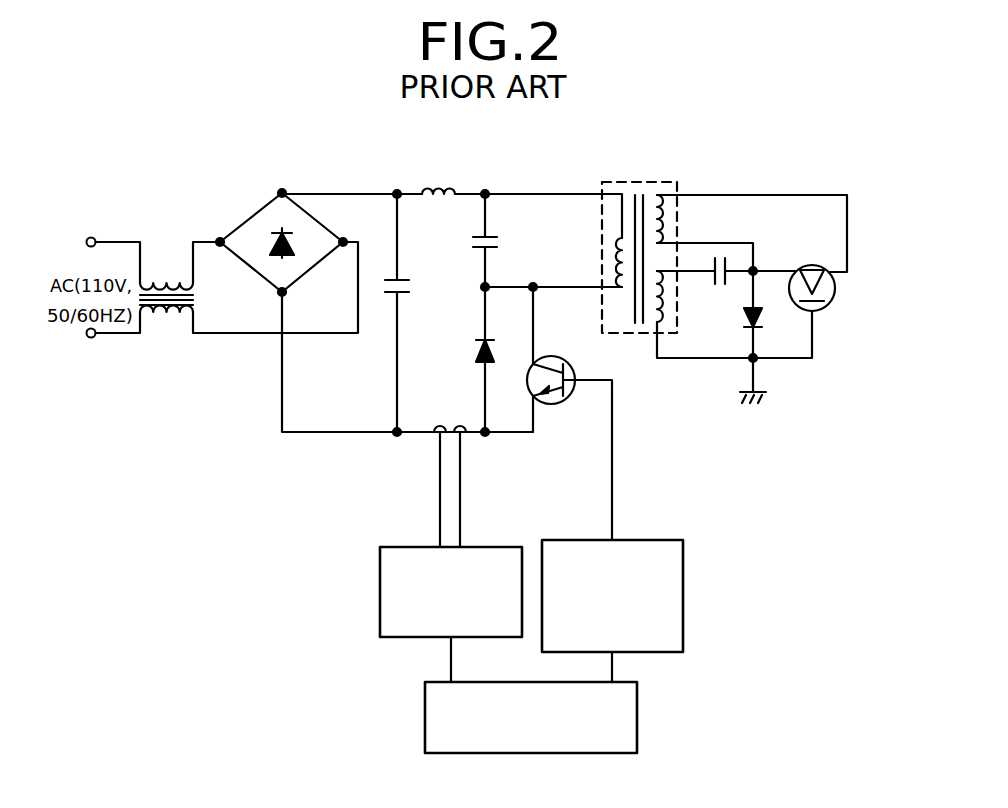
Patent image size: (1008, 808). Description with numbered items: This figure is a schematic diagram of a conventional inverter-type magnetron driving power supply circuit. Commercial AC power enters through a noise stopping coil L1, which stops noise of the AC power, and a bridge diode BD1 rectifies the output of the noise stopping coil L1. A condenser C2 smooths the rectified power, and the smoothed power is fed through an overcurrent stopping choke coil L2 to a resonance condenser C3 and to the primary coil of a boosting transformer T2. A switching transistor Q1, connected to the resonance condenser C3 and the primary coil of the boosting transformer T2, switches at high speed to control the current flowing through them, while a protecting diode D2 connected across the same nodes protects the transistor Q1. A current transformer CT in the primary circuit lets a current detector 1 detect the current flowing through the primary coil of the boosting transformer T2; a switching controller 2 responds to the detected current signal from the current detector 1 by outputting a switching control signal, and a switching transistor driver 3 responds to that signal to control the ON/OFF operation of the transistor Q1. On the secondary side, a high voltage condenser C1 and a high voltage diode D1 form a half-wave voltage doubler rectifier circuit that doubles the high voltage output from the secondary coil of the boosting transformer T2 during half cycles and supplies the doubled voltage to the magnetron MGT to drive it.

The bridge diode BD1 is at (281, 234).
The noise stopping coil L1 is at (166, 284).
The overcurrent stopping choke coil L2 is at (438, 177).
The condenser C2 is at (416, 313).
The resonance condenser C3 is at (502, 240).
The protecting diode D2 is at (465, 359).
The switching transistor Q1 is at (569, 413).
The current transformer CT is at (450, 474).
The boosting transformer T2 is at (639, 245).
The high voltage condenser C1 is at (719, 283).
The high voltage diode D1 is at (766, 314).
The magnetron MGT is at (833, 288).
The current detector 1 is at (497, 548).
The switching controller 2 is at (637, 725).
The switching transistor driver 3 is at (661, 541).